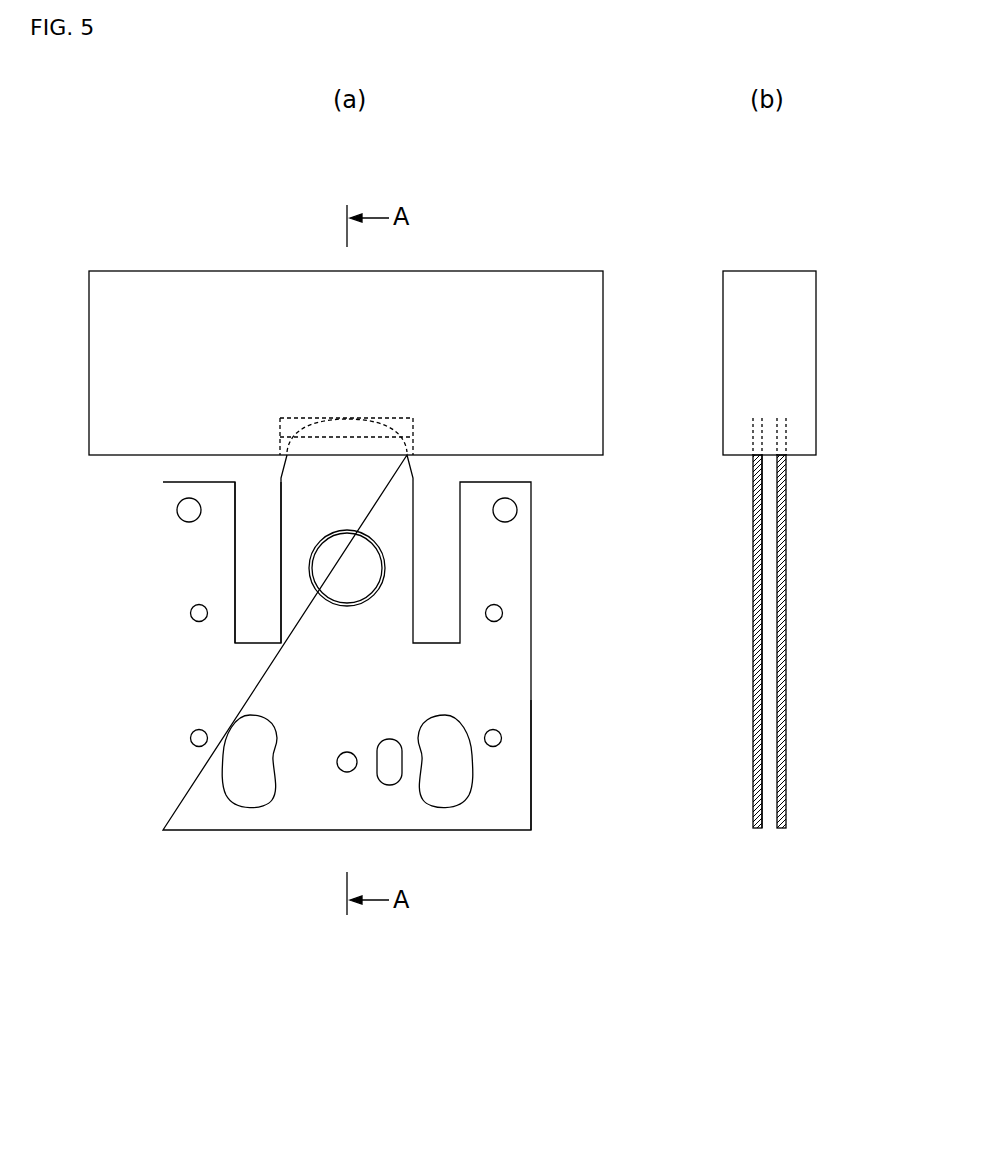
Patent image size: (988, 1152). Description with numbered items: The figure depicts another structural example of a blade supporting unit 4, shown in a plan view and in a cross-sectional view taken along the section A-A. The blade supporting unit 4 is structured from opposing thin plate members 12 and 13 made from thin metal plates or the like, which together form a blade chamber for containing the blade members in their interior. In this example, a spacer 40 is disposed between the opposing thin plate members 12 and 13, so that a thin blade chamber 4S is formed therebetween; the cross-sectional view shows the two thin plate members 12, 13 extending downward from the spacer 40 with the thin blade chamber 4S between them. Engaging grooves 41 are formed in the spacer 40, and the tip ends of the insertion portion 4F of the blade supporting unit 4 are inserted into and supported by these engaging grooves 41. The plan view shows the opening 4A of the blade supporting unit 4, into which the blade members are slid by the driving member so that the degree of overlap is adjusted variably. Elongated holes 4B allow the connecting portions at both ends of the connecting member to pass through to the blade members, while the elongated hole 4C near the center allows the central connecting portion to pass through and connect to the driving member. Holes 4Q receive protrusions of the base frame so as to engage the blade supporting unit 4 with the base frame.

The blade supporting unit 4 is at (497, 686).
The opening 4A is at (320, 585).
The elongated holes 4B is at (270, 768).
The elongated hole 4C is at (393, 763).
The insertion portion 4F is at (281, 542).
The hole 4Q is at (192, 618).
The thin blade chamber 4S is at (768, 605).
The thin plate member 12 is at (782, 830).
The thin plate member 13 is at (757, 830).
The spacer 40 is at (515, 271).
The engaging grooves 41 is at (757, 442).